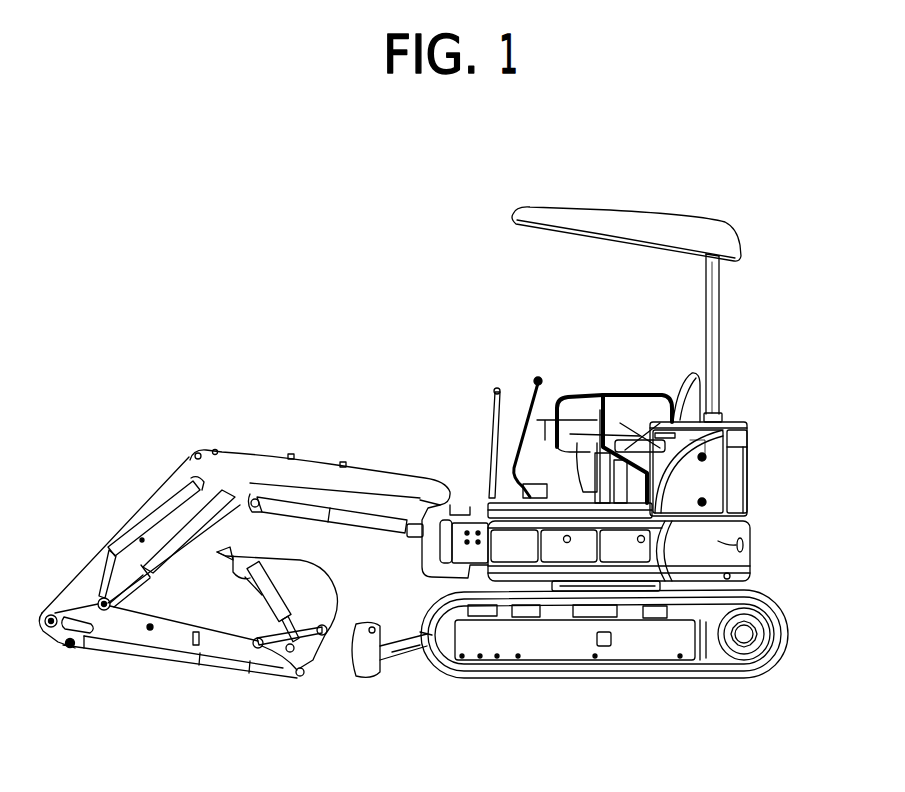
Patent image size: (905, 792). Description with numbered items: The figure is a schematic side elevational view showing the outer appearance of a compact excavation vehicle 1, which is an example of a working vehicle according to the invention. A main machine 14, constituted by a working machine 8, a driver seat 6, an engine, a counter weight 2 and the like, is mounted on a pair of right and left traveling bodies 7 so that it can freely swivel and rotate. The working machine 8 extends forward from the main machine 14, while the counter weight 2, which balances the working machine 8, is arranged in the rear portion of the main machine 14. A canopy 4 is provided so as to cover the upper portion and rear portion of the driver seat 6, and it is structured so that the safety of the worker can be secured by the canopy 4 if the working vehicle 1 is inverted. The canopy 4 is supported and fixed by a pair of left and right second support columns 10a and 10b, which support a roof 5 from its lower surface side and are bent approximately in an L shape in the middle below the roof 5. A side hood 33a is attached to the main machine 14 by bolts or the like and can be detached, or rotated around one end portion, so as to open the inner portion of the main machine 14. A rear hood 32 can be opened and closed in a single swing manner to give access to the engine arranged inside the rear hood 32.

The compact excavation vehicle 1 is at (244, 317).
The counter weight 2 is at (740, 538).
The canopy 4 is at (725, 204).
The roof 5 is at (612, 208).
The driver seat 6 is at (601, 339).
The traveling bodies 7 is at (541, 693).
The working machine 8 is at (244, 432).
The second support column 10a is at (708, 320).
The second support column 10b is at (715, 335).
The main machine 14 is at (401, 567).
The rear hood 32 is at (735, 468).
The side hood 33a is at (680, 478).